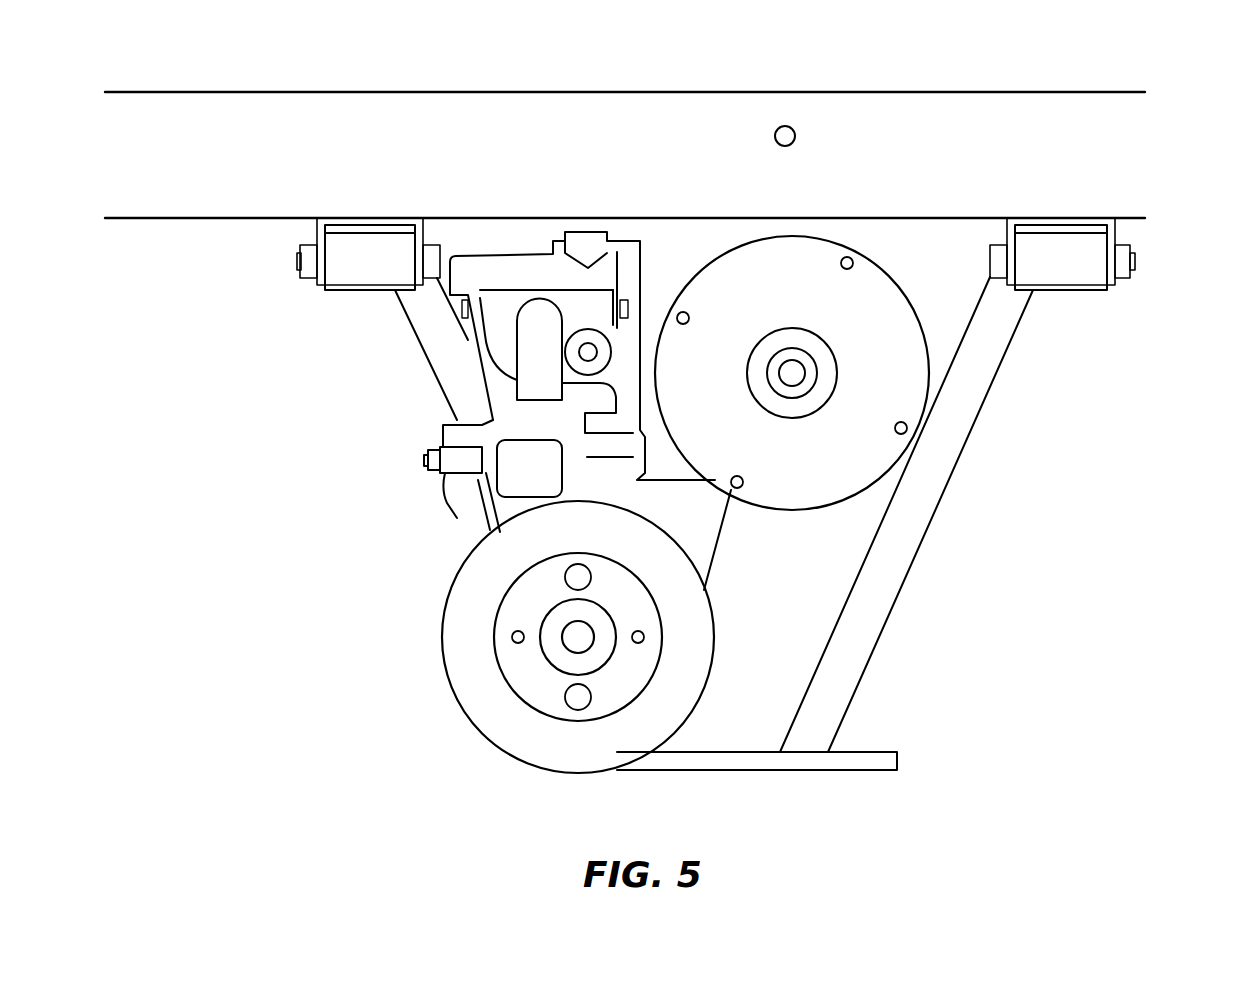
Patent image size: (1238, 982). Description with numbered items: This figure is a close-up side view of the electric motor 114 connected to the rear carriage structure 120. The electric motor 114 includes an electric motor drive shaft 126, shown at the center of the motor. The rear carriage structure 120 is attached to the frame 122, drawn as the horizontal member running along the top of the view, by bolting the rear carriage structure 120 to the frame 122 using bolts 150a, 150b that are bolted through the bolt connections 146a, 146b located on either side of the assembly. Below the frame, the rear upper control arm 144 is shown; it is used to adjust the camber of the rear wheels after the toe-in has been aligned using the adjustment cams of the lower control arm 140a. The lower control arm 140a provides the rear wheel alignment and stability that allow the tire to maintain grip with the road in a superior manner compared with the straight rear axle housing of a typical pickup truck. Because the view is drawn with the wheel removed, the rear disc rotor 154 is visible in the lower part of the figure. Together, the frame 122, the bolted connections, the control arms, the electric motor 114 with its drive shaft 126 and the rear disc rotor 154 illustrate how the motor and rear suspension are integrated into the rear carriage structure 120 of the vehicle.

The frame 122 is at (850, 135).
The bolt 150a is at (443, 250).
The bolt 150b is at (993, 257).
The bolt connection 146a is at (350, 278).
The bolt connection 146b is at (1068, 282).
The rear upper control arm 144 is at (532, 367).
The lower control arm 140a is at (462, 512).
The rear disc rotor 154 is at (507, 710).
The electric motor 114 is at (818, 483).
The electric motor drive shaft 126 is at (790, 372).
The rear carriage structure 120 is at (1002, 395).